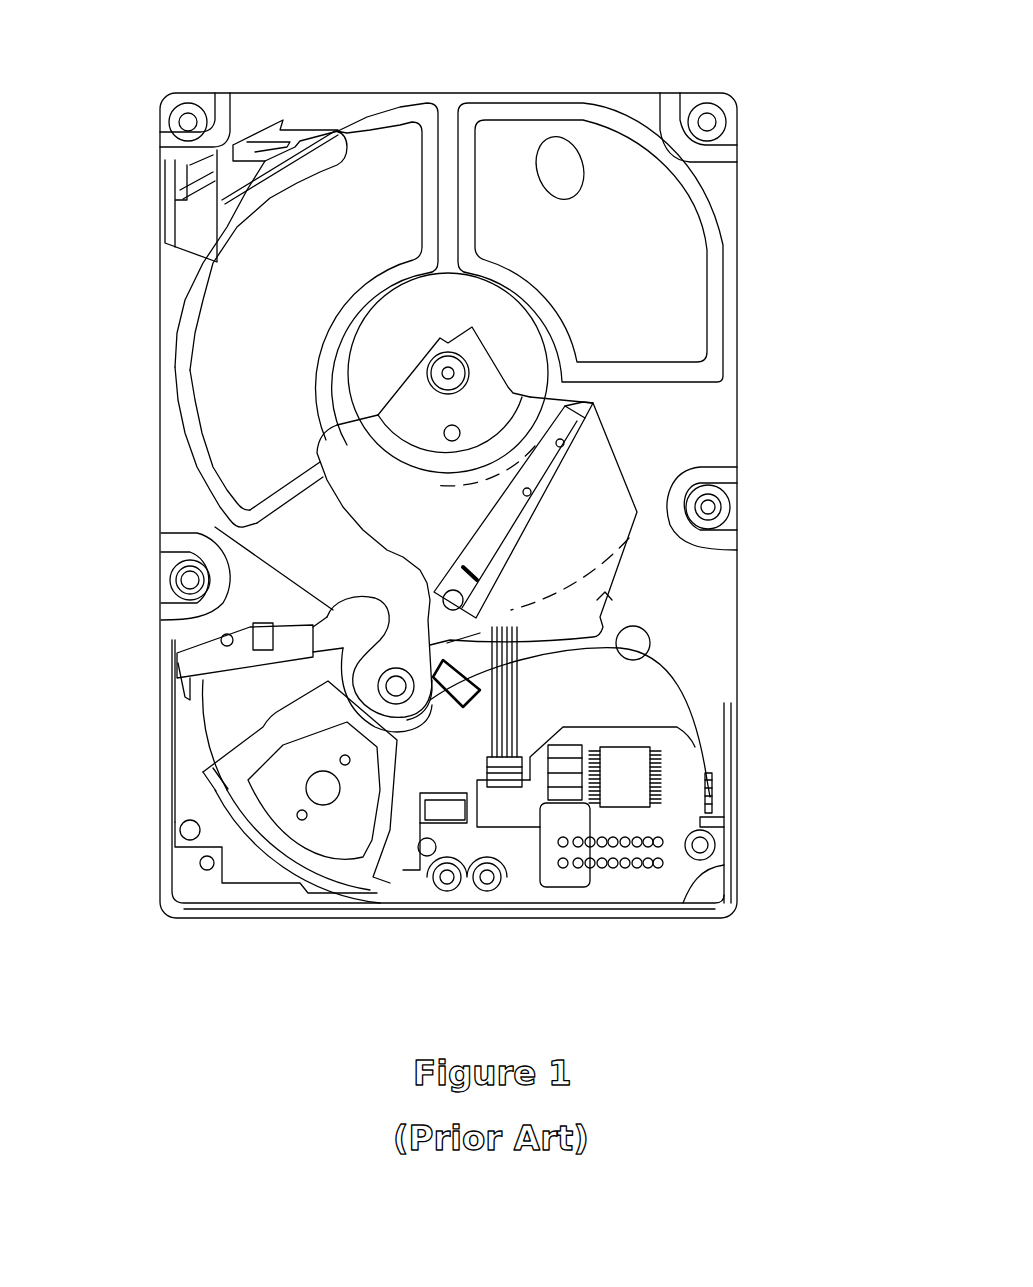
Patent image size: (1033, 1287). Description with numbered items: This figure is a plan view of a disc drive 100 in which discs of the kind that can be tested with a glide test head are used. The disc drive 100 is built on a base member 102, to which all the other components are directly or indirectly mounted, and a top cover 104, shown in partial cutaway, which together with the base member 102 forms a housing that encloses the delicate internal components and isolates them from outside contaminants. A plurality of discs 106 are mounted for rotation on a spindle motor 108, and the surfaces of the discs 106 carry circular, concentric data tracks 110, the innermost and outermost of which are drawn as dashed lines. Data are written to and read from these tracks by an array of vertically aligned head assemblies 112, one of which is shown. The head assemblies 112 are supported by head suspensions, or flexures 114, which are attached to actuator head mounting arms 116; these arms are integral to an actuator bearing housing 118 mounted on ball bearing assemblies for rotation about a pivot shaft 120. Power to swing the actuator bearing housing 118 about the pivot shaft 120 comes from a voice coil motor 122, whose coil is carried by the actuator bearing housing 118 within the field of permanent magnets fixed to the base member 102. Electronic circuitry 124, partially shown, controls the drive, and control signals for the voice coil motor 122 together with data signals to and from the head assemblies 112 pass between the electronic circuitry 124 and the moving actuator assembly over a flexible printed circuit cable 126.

The disc drive 100 is at (145, 467).
The base member 102 is at (160, 830).
The top cover 104 is at (455, 95).
The discs 106 is at (600, 418).
The spindle motor 108 is at (492, 382).
The data tracks 110 is at (600, 400).
The head assemblies 112 is at (600, 417).
The flexures 114 is at (590, 530).
The actuator head mounting arms 116 is at (617, 633).
The actuator bearing housing 118 is at (363, 640).
The pivot shaft 120 is at (406, 692).
The voice coil motor 122 is at (272, 870).
The electronic circuitry 124 is at (672, 796).
The flexible printed circuit cable 126 is at (650, 700).